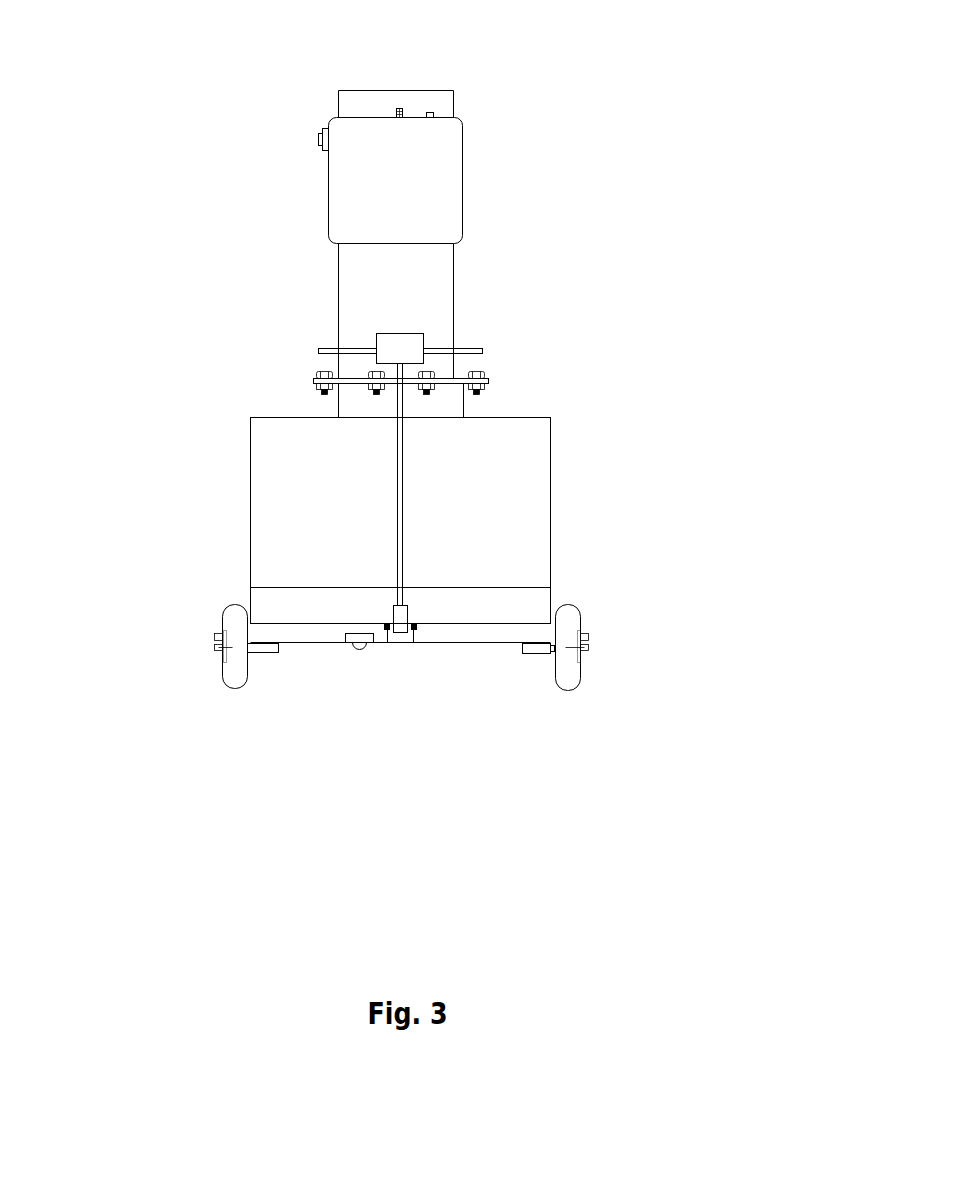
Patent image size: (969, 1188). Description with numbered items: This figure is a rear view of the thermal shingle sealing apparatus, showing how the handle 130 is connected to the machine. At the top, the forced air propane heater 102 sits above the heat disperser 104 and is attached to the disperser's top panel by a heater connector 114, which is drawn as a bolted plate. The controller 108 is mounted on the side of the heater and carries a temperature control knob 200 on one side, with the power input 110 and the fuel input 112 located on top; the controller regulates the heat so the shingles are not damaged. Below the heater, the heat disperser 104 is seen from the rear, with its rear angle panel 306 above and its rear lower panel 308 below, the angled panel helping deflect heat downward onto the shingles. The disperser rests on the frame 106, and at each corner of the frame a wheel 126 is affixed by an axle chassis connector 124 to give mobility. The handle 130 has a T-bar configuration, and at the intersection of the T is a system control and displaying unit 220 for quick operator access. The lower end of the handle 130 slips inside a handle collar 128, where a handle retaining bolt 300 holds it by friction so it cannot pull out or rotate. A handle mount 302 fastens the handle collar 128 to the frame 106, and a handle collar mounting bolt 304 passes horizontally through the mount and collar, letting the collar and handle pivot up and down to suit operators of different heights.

The forced air propane heater 102 is at (395, 305).
The heat disperser 104 is at (230, 488).
The frame 106 is at (283, 632).
The controller 108 is at (396, 180).
The power input 110 is at (432, 115).
The fuel input 112 is at (399, 112).
The heater connector 114 is at (363, 407).
The axle chassis connector 124 is at (535, 652).
The wheel 126 is at (233, 645).
The handle collar 128 is at (403, 624).
The handle 130 is at (400, 495).
The temperature control knob 200 is at (318, 142).
The system control and displaying unit 220 is at (400, 348).
The handle retaining bolt 300 is at (403, 610).
The handle mount 302 is at (389, 627).
The handle collar mounting bolt 304 is at (409, 627).
The rear angle panel 306 is at (338, 529).
The rear lower panel 308 is at (470, 600).